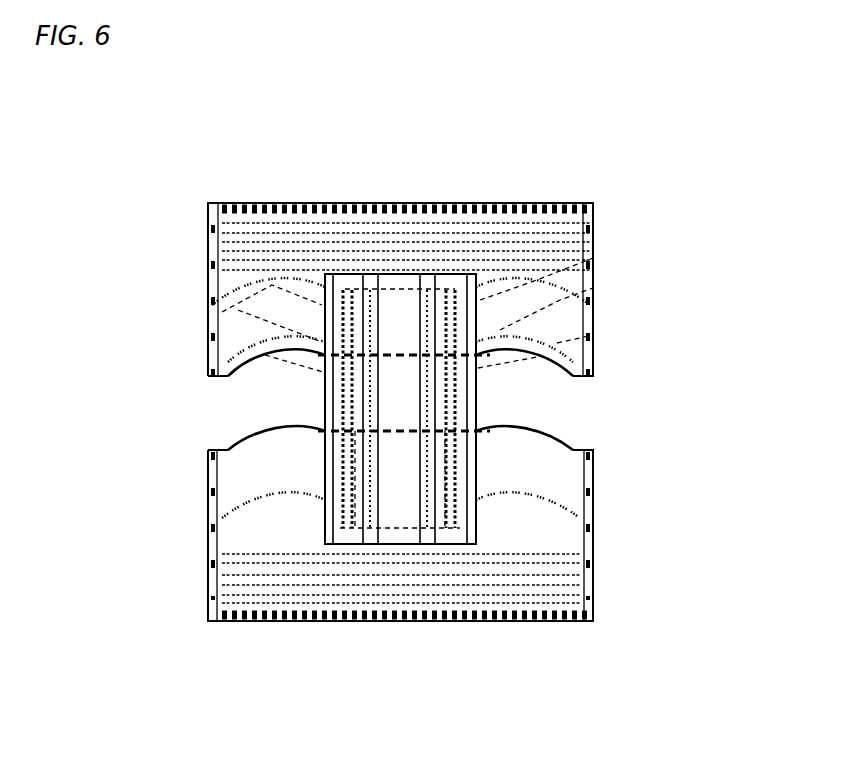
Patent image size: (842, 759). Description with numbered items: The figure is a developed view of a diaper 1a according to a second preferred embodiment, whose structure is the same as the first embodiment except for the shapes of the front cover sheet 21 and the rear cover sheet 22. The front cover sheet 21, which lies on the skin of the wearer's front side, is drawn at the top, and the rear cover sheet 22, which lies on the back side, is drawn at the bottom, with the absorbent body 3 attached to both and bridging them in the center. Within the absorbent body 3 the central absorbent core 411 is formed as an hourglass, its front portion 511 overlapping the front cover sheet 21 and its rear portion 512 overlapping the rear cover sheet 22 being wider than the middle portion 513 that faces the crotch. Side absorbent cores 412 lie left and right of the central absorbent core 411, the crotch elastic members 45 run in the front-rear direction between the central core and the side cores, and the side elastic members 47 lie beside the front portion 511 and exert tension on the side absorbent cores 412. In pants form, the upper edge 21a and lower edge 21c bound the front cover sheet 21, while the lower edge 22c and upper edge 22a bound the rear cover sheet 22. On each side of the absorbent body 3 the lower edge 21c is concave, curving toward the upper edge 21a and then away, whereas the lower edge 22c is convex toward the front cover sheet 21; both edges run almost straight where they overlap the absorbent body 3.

The diaper 1a is at (188, 138).
The front cover sheet 21 is at (265, 141).
The upper edge 21a is at (287, 203).
The lower edge 21c is at (240, 372).
The rear cover sheet 22 is at (236, 680).
The upper edge 22a is at (254, 623).
The lower edge 22c is at (240, 445).
The absorbent body 3 is at (404, 268).
The crotch elastic members 45 is at (207, 304).
The side elastic members 47 is at (207, 254).
The central absorbent core 411 is at (665, 448).
The side absorbent cores 412 is at (207, 336).
The front portion 511 is at (445, 270).
The rear portion 512 is at (410, 497).
The middle portion 513 is at (490, 431).